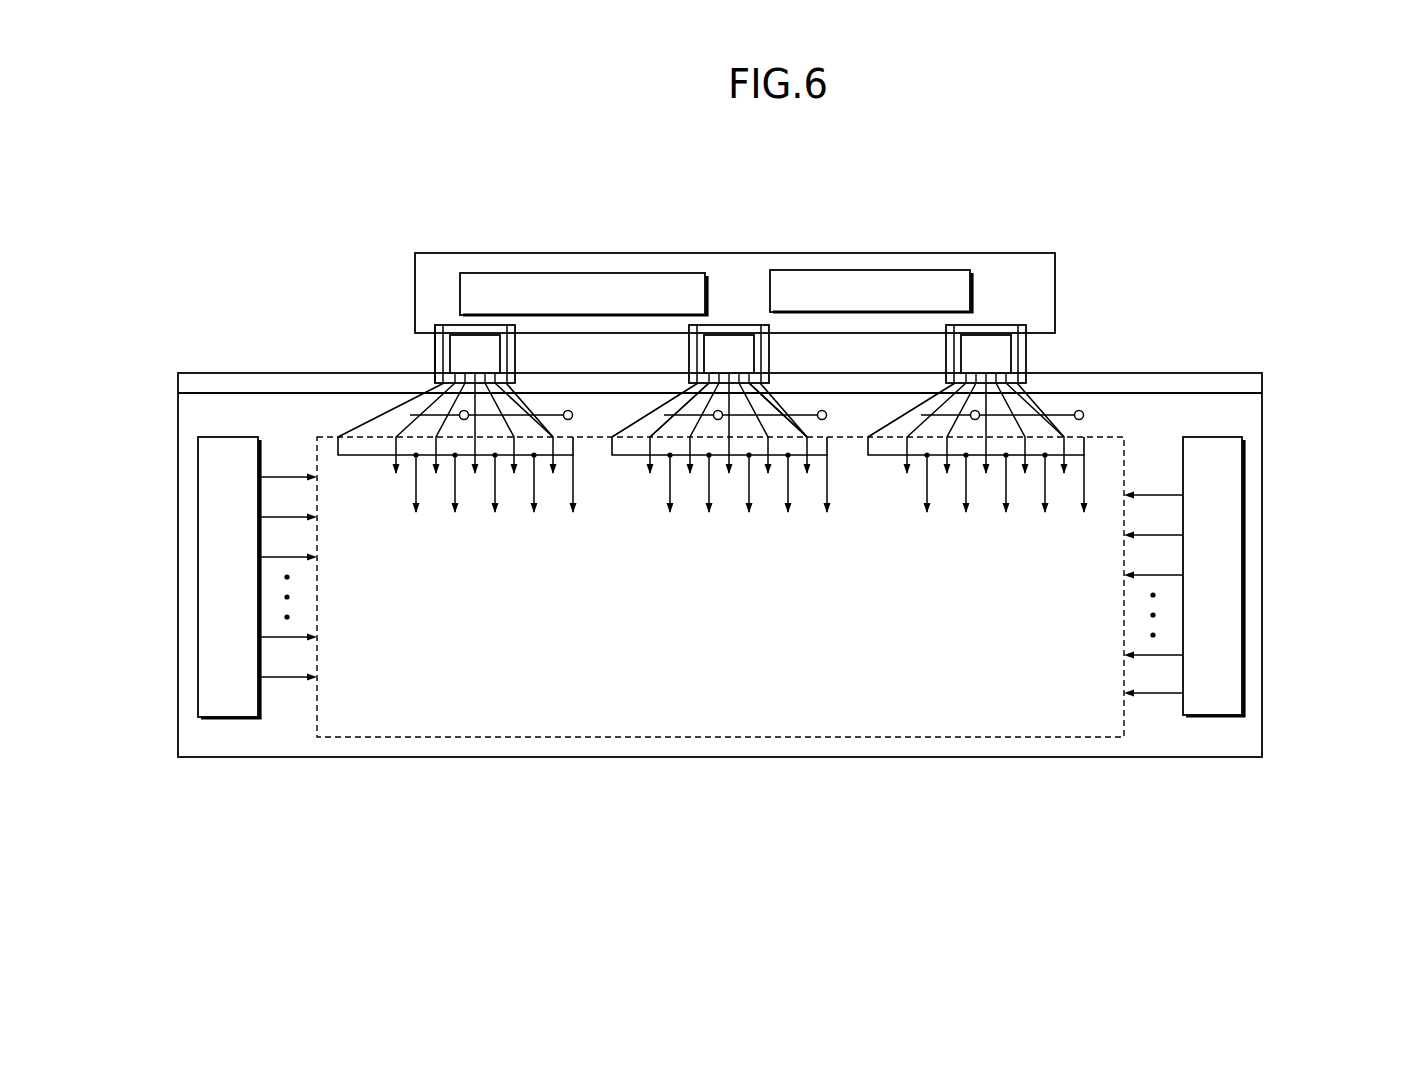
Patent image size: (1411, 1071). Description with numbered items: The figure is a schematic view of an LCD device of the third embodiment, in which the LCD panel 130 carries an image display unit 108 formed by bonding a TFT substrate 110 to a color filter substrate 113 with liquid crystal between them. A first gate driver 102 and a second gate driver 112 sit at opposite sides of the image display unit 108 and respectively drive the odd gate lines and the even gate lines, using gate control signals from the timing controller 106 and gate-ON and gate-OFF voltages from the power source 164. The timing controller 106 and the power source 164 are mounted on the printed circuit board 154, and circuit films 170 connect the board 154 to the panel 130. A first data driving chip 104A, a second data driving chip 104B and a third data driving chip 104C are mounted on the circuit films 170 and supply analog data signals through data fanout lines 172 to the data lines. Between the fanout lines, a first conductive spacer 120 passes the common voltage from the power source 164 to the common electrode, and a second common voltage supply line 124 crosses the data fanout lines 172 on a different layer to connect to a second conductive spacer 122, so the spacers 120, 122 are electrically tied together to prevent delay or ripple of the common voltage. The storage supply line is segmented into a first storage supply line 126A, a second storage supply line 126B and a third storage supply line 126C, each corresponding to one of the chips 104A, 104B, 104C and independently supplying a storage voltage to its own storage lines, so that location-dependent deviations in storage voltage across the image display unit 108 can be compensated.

The first gate driver 102 is at (225, 717).
The first data driving chip 104A is at (452, 335).
The second data driving chip 104B is at (738, 335).
The third data driving chip 104C is at (1011, 350).
The timing controller 106 is at (580, 273).
The image display unit (pixel array) 108 is at (733, 737).
The TFT substrate 110 is at (1262, 376).
The second gate driver 112 is at (1210, 715).
The color filter substrate 113 is at (1262, 393).
The first conductive spacer 120 is at (829, 408).
The second conductive spacer 122 is at (693, 398).
The second common voltage supply line 124 is at (790, 410).
The first storage supply line 126A is at (357, 422).
The second storage supply line 126B is at (635, 420).
The third storage supply line 126C is at (915, 408).
The LCD panel 130 is at (1338, 373).
The printed circuit board (PCB) 154 is at (1055, 291).
The power source 164 is at (847, 270).
The circuit film 170 is at (435, 352).
The data fanout line 172 is at (440, 407).